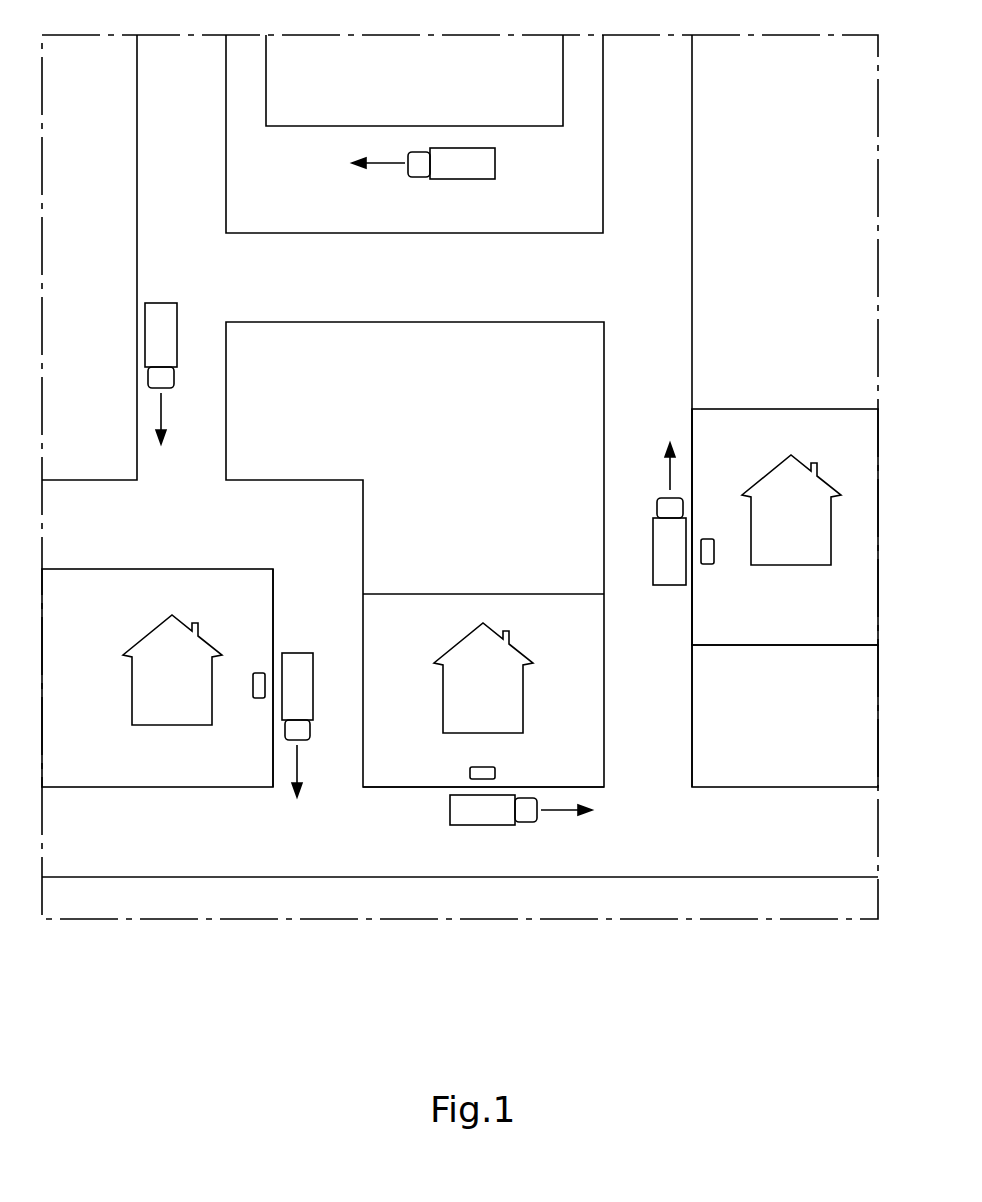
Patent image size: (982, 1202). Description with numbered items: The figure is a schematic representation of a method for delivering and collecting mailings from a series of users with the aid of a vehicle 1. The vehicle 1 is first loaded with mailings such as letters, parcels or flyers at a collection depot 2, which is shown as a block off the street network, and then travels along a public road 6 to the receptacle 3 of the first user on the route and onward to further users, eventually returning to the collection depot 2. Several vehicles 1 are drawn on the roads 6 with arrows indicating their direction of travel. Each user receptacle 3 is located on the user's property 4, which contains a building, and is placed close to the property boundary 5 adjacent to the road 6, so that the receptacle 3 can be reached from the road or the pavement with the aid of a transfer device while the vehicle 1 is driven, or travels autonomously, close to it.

The vehicle 1 is at (495, 173).
The collection depot 2 is at (406, 96).
The receptacle 3 is at (257, 699).
The property 4 is at (163, 771).
The property boundary 5 is at (273, 630).
The road 6 is at (657, 296).